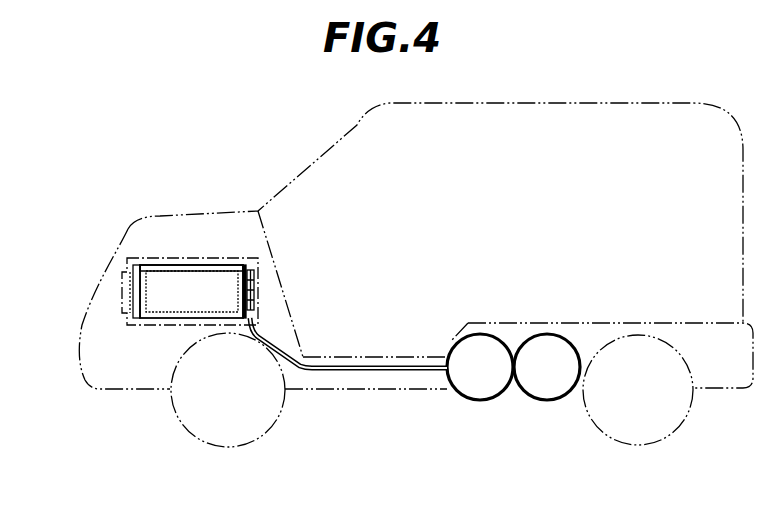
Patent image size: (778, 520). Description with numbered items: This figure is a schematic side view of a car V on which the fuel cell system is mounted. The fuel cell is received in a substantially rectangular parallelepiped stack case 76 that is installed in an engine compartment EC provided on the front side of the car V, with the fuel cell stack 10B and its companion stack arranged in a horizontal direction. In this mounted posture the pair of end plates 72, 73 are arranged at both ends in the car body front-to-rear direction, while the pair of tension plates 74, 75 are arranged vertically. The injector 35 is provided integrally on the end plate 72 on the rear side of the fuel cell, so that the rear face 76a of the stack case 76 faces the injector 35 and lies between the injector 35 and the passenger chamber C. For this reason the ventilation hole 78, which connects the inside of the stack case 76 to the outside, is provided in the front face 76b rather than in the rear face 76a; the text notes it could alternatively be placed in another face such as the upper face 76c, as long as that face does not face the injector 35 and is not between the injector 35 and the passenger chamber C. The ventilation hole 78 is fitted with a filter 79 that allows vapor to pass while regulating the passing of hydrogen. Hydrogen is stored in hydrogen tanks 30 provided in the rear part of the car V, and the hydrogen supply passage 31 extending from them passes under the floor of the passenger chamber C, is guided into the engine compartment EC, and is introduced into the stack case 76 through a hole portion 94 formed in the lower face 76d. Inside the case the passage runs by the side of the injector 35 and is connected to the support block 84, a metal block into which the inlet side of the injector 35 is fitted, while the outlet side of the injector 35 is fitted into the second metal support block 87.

The fuel cell stack 10B is at (207, 300).
The hydrogen tank 30 is at (482, 401).
The hydrogen supply passage 31 is at (387, 364).
The injector 35 is at (258, 280).
The end plate 72 is at (245, 265).
The end plate 73 is at (128, 259).
The tension plate 74 is at (182, 263).
The tension plate 75 is at (143, 326).
The stack case 76 is at (240, 258).
The rear face 76a is at (258, 291).
The front face 76b is at (125, 262).
The upper face 76c is at (160, 257).
The lower face 76d is at (160, 326).
The ventilation hole 78 is at (125, 308).
The filter 79 is at (123, 292).
The support block 84 is at (256, 268).
The support block 87 is at (258, 308).
The hole portion 94 is at (232, 325).
The engine compartment EC is at (214, 250).
The car V is at (331, 118).
The passenger chamber C is at (583, 146).